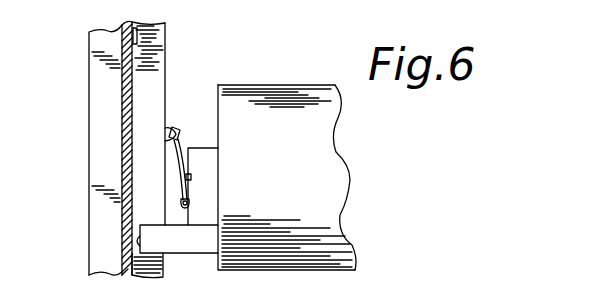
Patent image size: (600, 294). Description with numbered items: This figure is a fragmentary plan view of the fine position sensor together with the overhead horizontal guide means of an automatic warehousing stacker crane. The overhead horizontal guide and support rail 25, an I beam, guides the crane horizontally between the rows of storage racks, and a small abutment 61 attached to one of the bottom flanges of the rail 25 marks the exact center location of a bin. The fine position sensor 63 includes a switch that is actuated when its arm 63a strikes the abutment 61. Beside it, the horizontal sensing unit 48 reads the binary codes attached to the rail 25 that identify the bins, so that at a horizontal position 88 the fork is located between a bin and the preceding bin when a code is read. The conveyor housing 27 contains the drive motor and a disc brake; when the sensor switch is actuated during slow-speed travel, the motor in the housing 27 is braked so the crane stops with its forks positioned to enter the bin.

The overhead horizontal guide and support rail 25 is at (98, 100).
The horizontal position 88 is at (137, 42).
The abutment 61 is at (168, 126).
The fine position sensor 63 is at (210, 195).
The arm 63a is at (176, 136).
The horizontal sensing unit 48 is at (196, 252).
The conveyor housing 27 is at (287, 194).